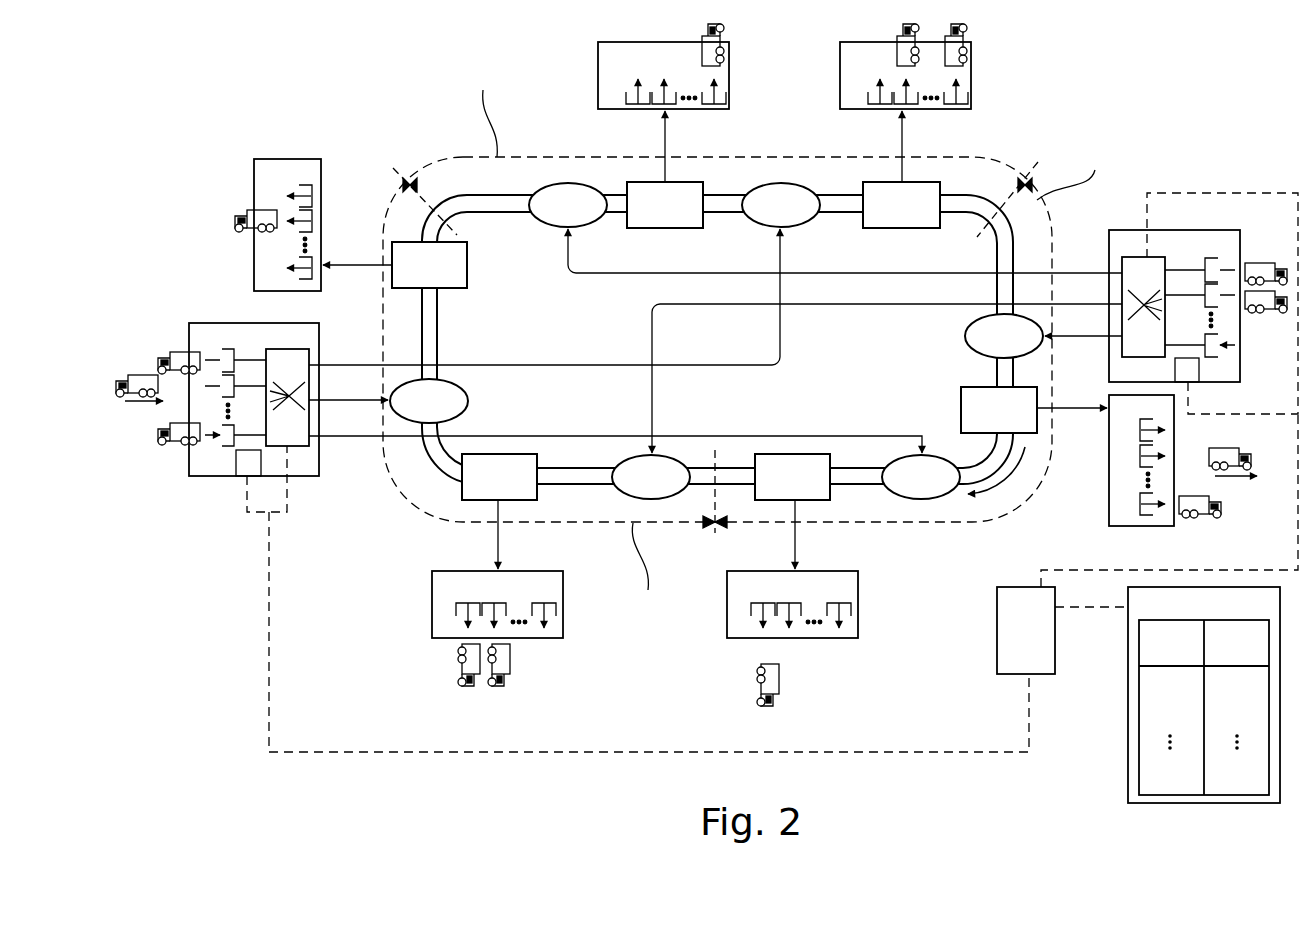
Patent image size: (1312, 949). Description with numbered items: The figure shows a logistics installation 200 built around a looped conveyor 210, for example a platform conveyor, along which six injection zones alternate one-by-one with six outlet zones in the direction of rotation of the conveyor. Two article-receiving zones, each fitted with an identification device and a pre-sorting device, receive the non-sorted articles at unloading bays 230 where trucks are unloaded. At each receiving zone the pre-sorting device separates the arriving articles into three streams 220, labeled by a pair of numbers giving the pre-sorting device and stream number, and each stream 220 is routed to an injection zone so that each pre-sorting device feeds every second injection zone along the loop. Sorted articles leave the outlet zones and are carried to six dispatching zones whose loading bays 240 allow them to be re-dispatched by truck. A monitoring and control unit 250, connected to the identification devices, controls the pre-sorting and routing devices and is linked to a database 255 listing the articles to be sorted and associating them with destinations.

The logistics installation 200 is at (312, 96).
The looped conveyor 210 is at (958, 192).
The streams of pre-sorted articles 220 is at (343, 438).
The unloading bays 230 is at (218, 457).
The loading bays 240 is at (446, 620).
The monitoring and control unit 250 is at (1026, 630).
The database 255 is at (1204, 695).